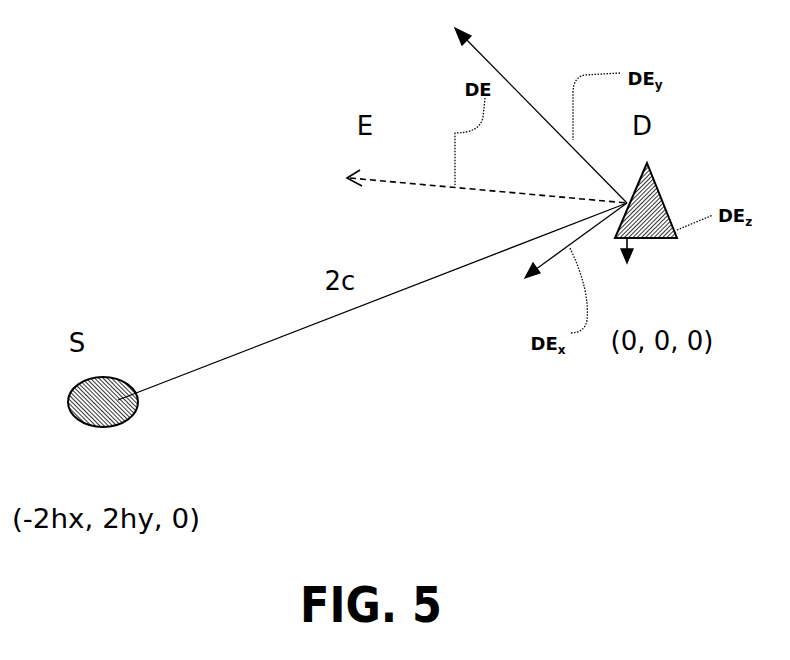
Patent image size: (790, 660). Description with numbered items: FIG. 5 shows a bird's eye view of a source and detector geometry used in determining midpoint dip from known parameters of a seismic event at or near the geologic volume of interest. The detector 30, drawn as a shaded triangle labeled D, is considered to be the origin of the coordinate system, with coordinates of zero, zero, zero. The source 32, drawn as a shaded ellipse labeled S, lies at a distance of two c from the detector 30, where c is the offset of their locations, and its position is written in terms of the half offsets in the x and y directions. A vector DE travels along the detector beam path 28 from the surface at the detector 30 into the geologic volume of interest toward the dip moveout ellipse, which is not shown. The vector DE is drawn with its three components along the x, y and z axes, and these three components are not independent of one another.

The detector beam path 28 is at (533, 107).
The detector 30 is at (650, 240).
The source 32 is at (117, 378).